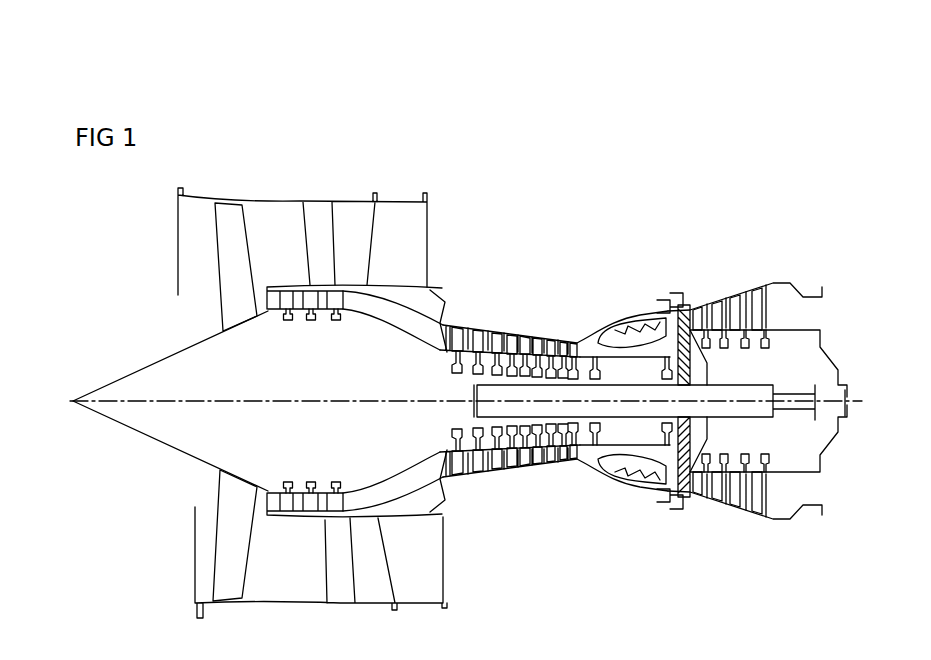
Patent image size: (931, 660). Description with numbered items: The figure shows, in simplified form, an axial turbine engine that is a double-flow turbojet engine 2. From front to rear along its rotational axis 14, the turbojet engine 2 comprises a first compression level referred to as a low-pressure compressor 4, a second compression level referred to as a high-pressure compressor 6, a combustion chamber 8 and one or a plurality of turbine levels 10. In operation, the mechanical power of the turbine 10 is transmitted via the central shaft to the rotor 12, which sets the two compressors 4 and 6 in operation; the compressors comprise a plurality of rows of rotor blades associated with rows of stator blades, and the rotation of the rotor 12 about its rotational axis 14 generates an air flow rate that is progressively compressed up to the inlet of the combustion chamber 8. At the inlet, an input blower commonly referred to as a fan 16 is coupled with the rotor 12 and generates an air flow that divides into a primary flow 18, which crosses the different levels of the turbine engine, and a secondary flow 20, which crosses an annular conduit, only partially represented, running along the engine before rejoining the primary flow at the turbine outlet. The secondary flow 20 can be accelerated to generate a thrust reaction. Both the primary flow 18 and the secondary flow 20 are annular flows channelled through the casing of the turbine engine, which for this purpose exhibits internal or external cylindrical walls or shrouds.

The turbojet engine 2 is at (621, 227).
The low-pressure compressor 4 is at (284, 318).
The high-pressure compressor 6 is at (487, 340).
The combustion chamber 8 is at (614, 340).
The turbine 10 is at (750, 312).
The rotor 12 is at (148, 425).
The rotational axis 14 is at (314, 403).
The fan 16 is at (234, 260).
The primary flow 18 is at (357, 497).
The secondary flow 20 is at (475, 585).